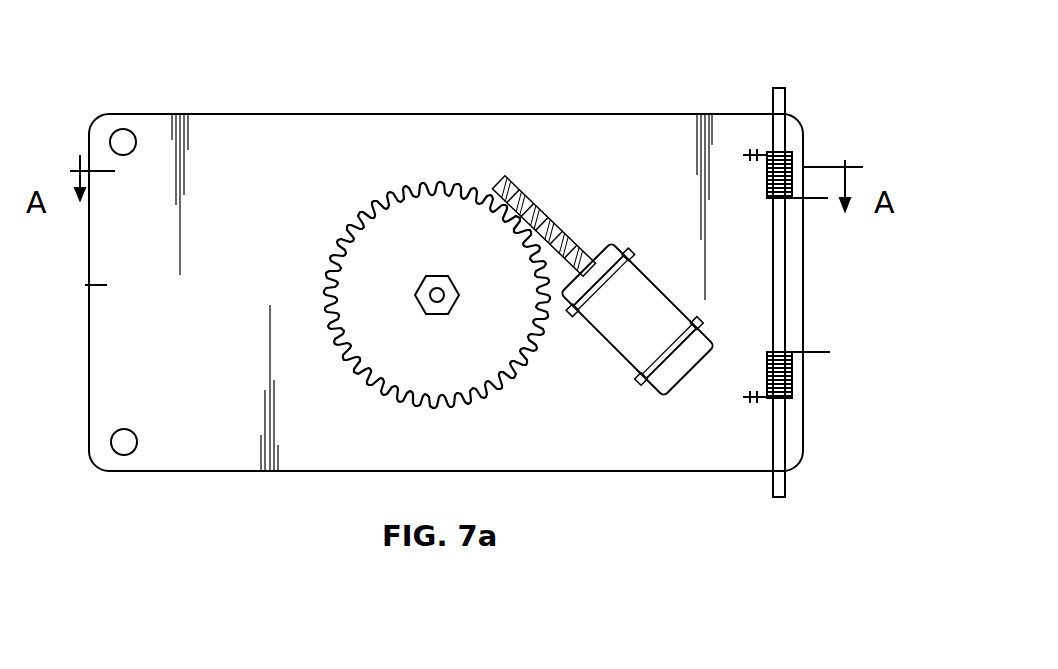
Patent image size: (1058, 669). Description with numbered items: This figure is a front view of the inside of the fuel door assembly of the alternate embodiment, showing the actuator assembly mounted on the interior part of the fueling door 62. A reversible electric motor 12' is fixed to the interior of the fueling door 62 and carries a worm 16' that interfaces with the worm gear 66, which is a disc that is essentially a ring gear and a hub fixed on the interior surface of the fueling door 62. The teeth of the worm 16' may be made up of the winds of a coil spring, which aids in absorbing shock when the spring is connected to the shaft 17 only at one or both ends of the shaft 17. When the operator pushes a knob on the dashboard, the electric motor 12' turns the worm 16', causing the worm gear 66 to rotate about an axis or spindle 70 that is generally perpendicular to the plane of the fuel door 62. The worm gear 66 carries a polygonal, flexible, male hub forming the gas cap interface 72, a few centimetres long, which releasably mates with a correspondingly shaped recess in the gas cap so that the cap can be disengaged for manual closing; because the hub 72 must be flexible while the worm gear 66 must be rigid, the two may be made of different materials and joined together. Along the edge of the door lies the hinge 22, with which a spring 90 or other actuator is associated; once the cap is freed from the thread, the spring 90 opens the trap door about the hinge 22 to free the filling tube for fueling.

The reversible electric motor 12' is at (637, 319).
The worm 16' is at (551, 226).
The shaft 17 is at (497, 177).
The hinge 22 is at (788, 97).
The fueling door 62 is at (442, 292).
The worm gear 66 is at (437, 295).
The spindle 70 is at (442, 298).
The gas cap interface 72 is at (428, 282).
The spring 90 is at (800, 165).